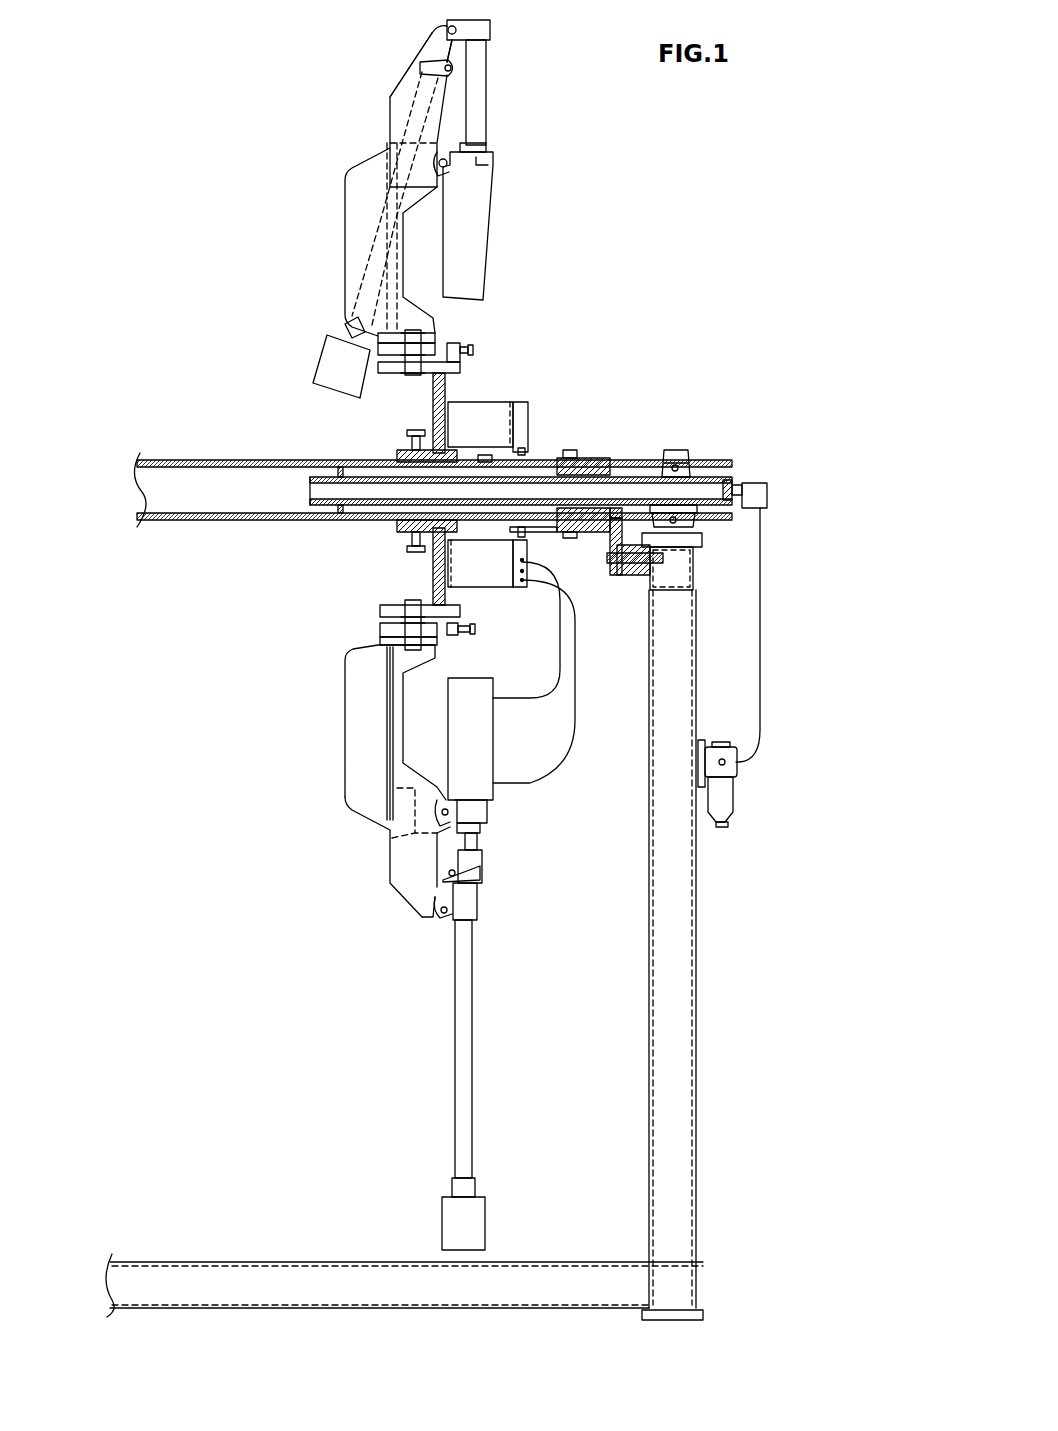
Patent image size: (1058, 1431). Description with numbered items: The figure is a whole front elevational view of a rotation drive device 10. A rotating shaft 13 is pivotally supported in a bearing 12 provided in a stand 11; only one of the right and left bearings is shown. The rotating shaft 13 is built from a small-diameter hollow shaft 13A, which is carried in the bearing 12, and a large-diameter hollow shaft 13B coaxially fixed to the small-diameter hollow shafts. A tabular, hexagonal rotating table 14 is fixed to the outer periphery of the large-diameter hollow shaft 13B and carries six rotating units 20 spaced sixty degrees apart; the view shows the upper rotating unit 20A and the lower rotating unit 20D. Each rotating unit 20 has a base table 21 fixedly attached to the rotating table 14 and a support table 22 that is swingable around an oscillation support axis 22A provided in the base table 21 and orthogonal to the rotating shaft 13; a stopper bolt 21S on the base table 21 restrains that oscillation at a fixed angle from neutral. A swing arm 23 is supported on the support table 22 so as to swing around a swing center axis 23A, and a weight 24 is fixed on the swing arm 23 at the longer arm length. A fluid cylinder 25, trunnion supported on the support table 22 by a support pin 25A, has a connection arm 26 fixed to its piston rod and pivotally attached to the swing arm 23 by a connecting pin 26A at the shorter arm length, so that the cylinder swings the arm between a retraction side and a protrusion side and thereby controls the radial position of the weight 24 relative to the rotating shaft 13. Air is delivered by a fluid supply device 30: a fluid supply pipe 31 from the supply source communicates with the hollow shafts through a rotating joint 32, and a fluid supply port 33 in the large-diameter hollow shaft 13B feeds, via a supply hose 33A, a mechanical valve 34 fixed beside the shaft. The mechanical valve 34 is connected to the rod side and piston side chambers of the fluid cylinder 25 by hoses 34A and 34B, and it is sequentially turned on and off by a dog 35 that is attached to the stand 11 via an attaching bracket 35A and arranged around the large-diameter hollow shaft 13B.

The rotation drive device 10 is at (198, 193).
The stand 11 is at (680, 992).
The bearing 12 is at (672, 450).
The rotating shaft 13 is at (202, 460).
The small-diameter hollow shaft 13A is at (713, 460).
The large-diameter hollow shaft 13B is at (195, 460).
The rotating table 14 is at (447, 390).
The rotating unit 20 is at (333, 175).
The rotating unit 20A is at (365, 150).
The rotating unit 20D is at (365, 830).
The base table 21 is at (393, 376).
The stopper bolt 21S is at (473, 350).
The support table 22 is at (352, 232).
The oscillation support axis 22A is at (415, 337).
The swing arm 23 is at (425, 48).
The swing center axis 23A is at (425, 68).
The weight 24 is at (328, 362).
The fluid cylinder 25 is at (483, 230).
The support pin 25A is at (447, 170).
The connection arm 26 is at (492, 27).
The connecting pin 26A is at (445, 28).
The fluid supply device 30 is at (786, 506).
The fluid supply pipe 31 is at (762, 626).
The rotating joint 32 is at (760, 483).
The fluid supply port 33 is at (500, 447).
The supply hose 33A is at (490, 593).
The mechanical valve 34 is at (528, 412).
The hose 34A is at (545, 775).
The hose 34B is at (530, 698).
The dog 35 is at (550, 530).
The attaching bracket 35A is at (615, 575).